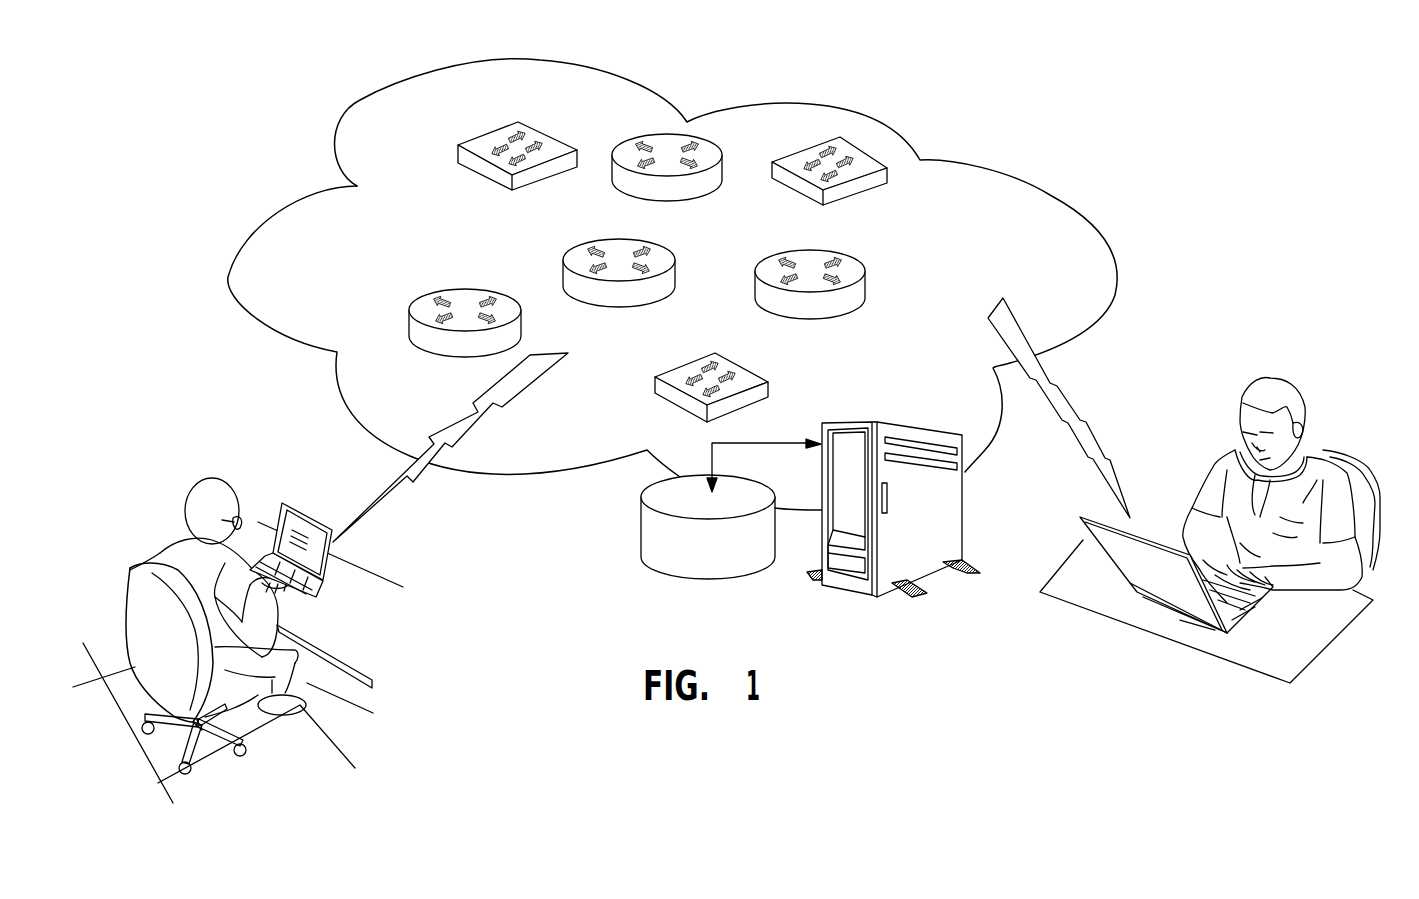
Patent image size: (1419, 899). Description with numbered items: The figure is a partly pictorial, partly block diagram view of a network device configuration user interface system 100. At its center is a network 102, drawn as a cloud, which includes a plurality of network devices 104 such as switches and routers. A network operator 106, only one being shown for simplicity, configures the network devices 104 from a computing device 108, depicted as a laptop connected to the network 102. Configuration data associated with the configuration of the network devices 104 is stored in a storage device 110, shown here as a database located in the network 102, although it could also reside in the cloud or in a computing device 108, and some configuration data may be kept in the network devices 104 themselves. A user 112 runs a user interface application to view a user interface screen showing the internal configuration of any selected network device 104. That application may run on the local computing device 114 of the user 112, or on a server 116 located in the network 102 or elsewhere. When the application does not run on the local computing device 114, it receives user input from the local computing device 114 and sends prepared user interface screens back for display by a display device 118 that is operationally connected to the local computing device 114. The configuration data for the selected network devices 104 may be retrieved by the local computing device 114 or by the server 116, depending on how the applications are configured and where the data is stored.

The network device configuration user interface system 100 is at (1007, 73).
The network 102 is at (1085, 205).
The network devices 104 is at (567, 258).
The network operator 106 is at (1247, 397).
The computing device 108 is at (1147, 603).
The storage device 110 is at (656, 567).
The user 112 is at (193, 485).
The local computing device 114 is at (315, 538).
The server 116 is at (963, 500).
The display device 118 is at (305, 513).